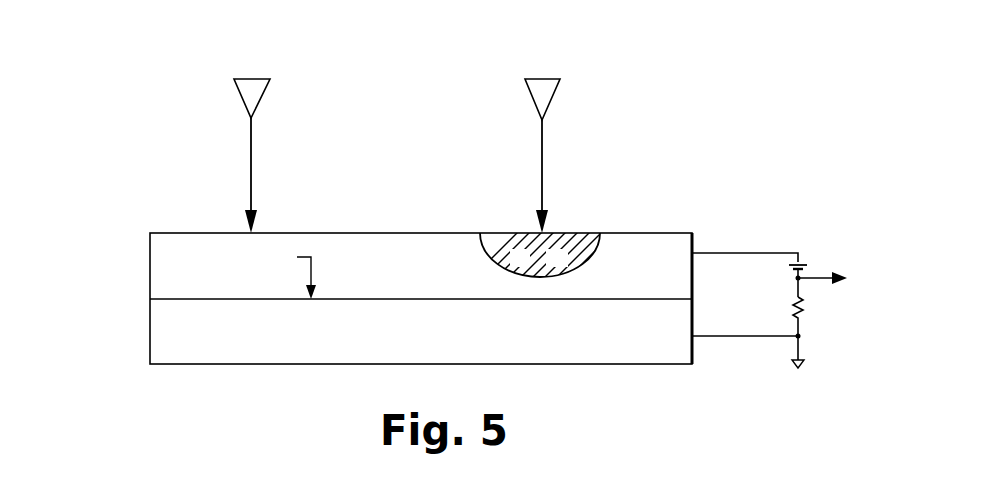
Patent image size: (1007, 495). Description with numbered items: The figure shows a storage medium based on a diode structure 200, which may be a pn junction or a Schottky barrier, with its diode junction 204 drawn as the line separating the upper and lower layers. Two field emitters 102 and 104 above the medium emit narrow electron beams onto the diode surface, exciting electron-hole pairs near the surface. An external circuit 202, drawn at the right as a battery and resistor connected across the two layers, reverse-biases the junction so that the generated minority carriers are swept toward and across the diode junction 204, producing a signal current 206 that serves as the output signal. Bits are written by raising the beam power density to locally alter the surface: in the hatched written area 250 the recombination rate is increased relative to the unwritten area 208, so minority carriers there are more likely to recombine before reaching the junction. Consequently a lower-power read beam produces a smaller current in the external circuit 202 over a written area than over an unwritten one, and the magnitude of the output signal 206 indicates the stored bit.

The diode structure 200 is at (125, 278).
The diode junction 204 is at (182, 300).
The field emitter 102 is at (255, 87).
The field emitter 104 is at (544, 87).
The unwritten area 208 is at (279, 207).
The written area 250 is at (576, 220).
The external circuit 202 is at (817, 245).
The signal current 206 is at (847, 280).